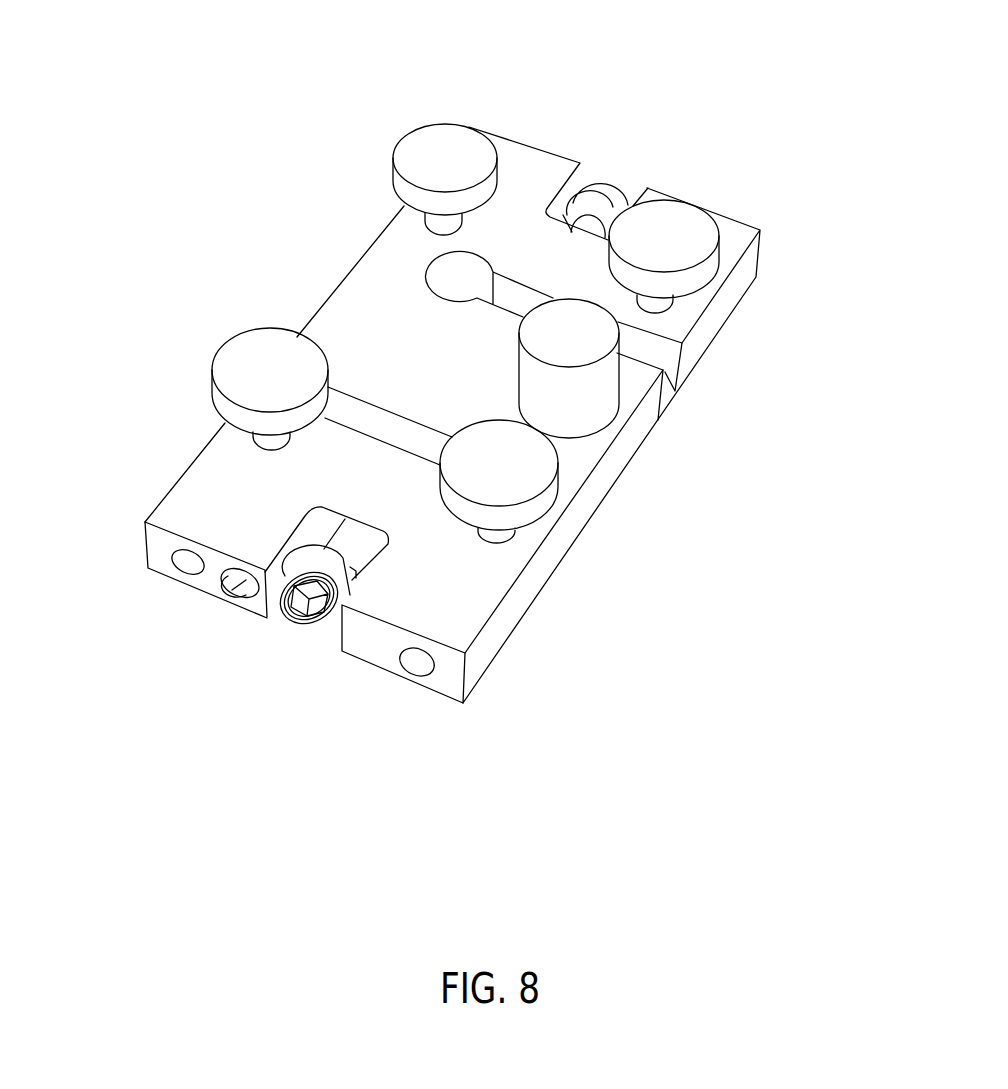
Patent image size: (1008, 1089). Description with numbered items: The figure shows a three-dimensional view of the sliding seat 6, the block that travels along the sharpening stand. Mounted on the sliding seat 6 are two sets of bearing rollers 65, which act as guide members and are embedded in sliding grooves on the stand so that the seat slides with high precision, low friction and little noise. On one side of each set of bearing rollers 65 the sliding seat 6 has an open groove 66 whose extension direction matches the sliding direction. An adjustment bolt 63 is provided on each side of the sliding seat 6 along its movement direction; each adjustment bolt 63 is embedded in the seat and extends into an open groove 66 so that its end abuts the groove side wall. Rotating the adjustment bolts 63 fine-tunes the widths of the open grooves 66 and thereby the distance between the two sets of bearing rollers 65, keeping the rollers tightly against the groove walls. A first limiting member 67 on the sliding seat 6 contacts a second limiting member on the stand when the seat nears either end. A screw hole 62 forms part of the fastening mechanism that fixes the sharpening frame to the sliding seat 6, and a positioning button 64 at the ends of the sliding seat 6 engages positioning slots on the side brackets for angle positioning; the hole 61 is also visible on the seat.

The sliding seat 6 is at (527, 200).
The mounting hole 61 is at (417, 662).
The screw hole 62 is at (188, 562).
The adjustment bolt 63 is at (610, 185).
The positioning button 64 is at (240, 583).
The bearing roller 65 is at (445, 157).
The open groove 66 is at (367, 420).
The first limiting member 67 is at (562, 410).